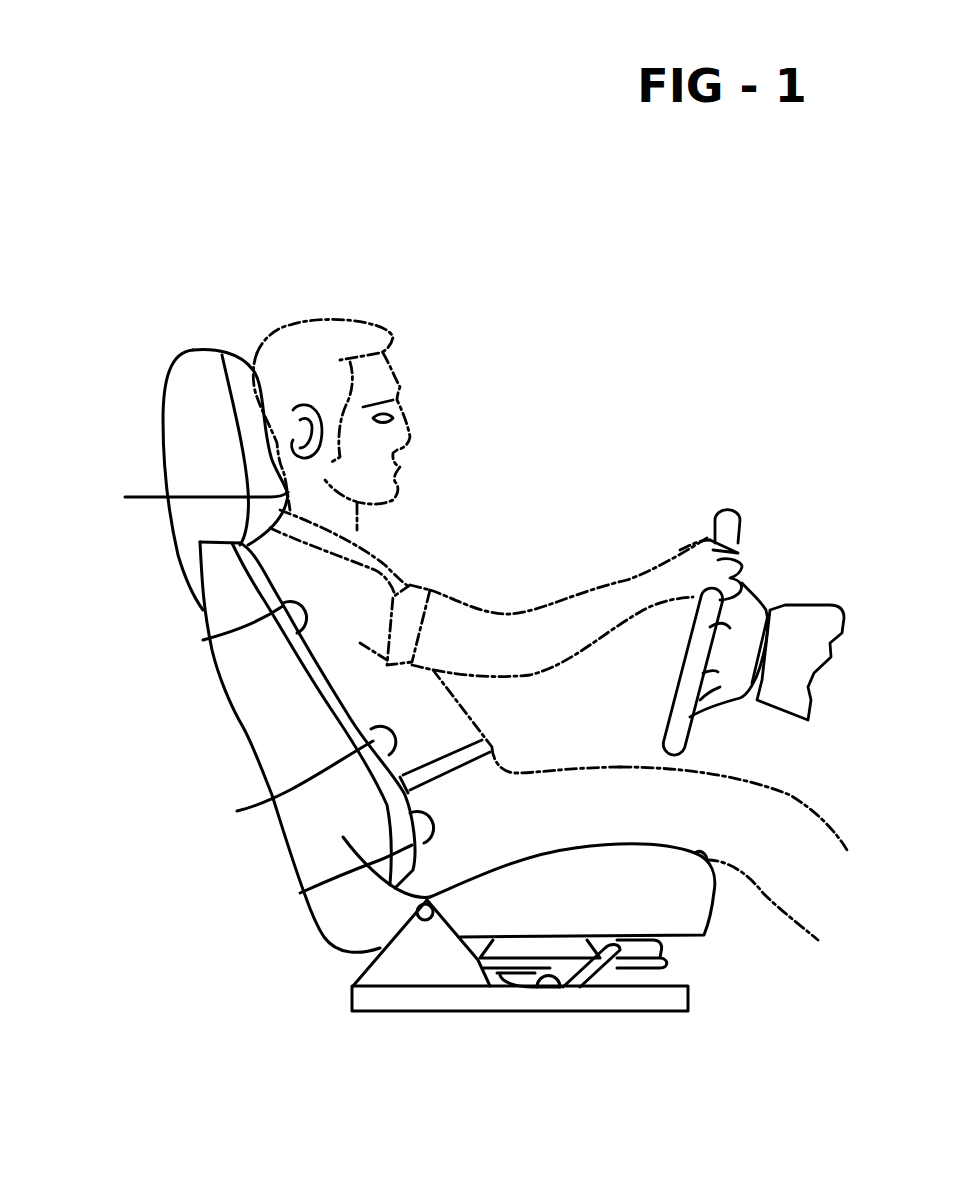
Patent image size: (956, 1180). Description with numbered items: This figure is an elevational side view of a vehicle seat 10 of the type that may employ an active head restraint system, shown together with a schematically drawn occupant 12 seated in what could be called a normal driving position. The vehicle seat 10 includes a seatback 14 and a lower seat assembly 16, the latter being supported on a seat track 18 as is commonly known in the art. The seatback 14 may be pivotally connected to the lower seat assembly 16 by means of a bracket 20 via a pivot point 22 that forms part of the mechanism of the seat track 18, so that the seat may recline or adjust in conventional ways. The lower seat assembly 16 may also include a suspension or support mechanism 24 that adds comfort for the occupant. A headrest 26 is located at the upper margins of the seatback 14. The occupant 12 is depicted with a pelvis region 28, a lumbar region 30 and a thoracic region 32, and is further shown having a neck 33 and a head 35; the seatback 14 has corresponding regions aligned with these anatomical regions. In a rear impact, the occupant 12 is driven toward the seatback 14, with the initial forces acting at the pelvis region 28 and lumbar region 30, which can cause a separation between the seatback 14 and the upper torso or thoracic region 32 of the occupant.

The vehicle seat 10 is at (250, 857).
The occupant 12 is at (550, 629).
The seatback 14 is at (250, 748).
The lower seat assembly 16 is at (713, 912).
The seat track 18 is at (547, 1013).
The bracket 20 is at (375, 967).
The pivot point 22 is at (430, 897).
The suspension or support mechanism 24 is at (667, 942).
The headrest 26 is at (193, 363).
The pelvis region 28 is at (300, 893).
The lumbar region 30 is at (237, 811).
The thoracic region 32 is at (203, 640).
The neck 33 is at (125, 497).
The head 35 is at (393, 388).